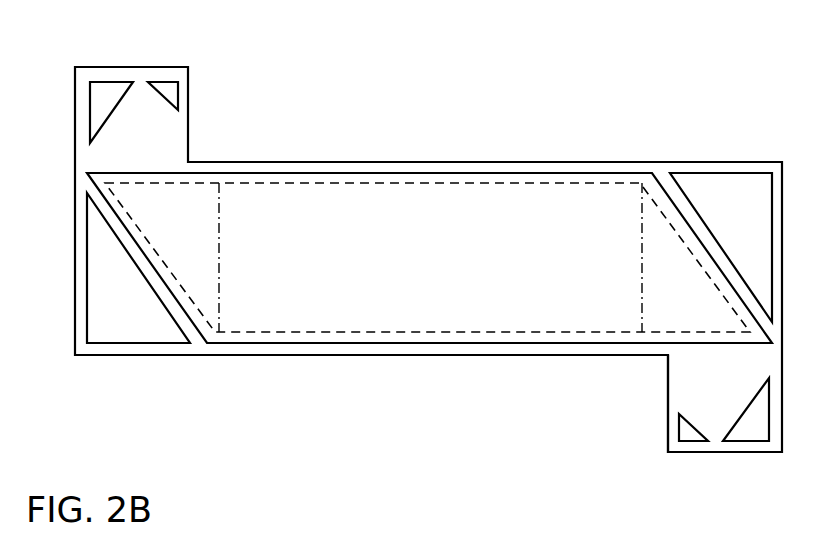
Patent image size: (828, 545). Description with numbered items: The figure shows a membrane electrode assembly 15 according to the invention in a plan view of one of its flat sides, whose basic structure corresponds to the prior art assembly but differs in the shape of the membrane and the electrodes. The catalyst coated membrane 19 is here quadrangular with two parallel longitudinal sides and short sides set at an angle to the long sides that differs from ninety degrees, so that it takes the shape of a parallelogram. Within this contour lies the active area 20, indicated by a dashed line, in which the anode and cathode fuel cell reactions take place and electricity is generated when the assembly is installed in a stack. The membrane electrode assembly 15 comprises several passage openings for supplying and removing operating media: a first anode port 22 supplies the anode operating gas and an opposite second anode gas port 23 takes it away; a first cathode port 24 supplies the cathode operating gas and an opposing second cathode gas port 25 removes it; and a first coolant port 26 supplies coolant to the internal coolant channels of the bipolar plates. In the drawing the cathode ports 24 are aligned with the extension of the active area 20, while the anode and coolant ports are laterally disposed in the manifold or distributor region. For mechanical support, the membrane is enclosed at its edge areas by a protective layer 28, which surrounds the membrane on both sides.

The membrane electrode assembly 15 is at (600, 115).
The catalyst coated membrane 19 is at (452, 217).
The active area 20 is at (427, 257).
The first anode port 22 is at (172, 90).
The second anode gas port 23 is at (687, 431).
The first cathode port 24 is at (120, 328).
The second cathode gas port 25 is at (101, 100).
The first coolant port 26 is at (750, 430).
The protective layer 28 is at (691, 382).